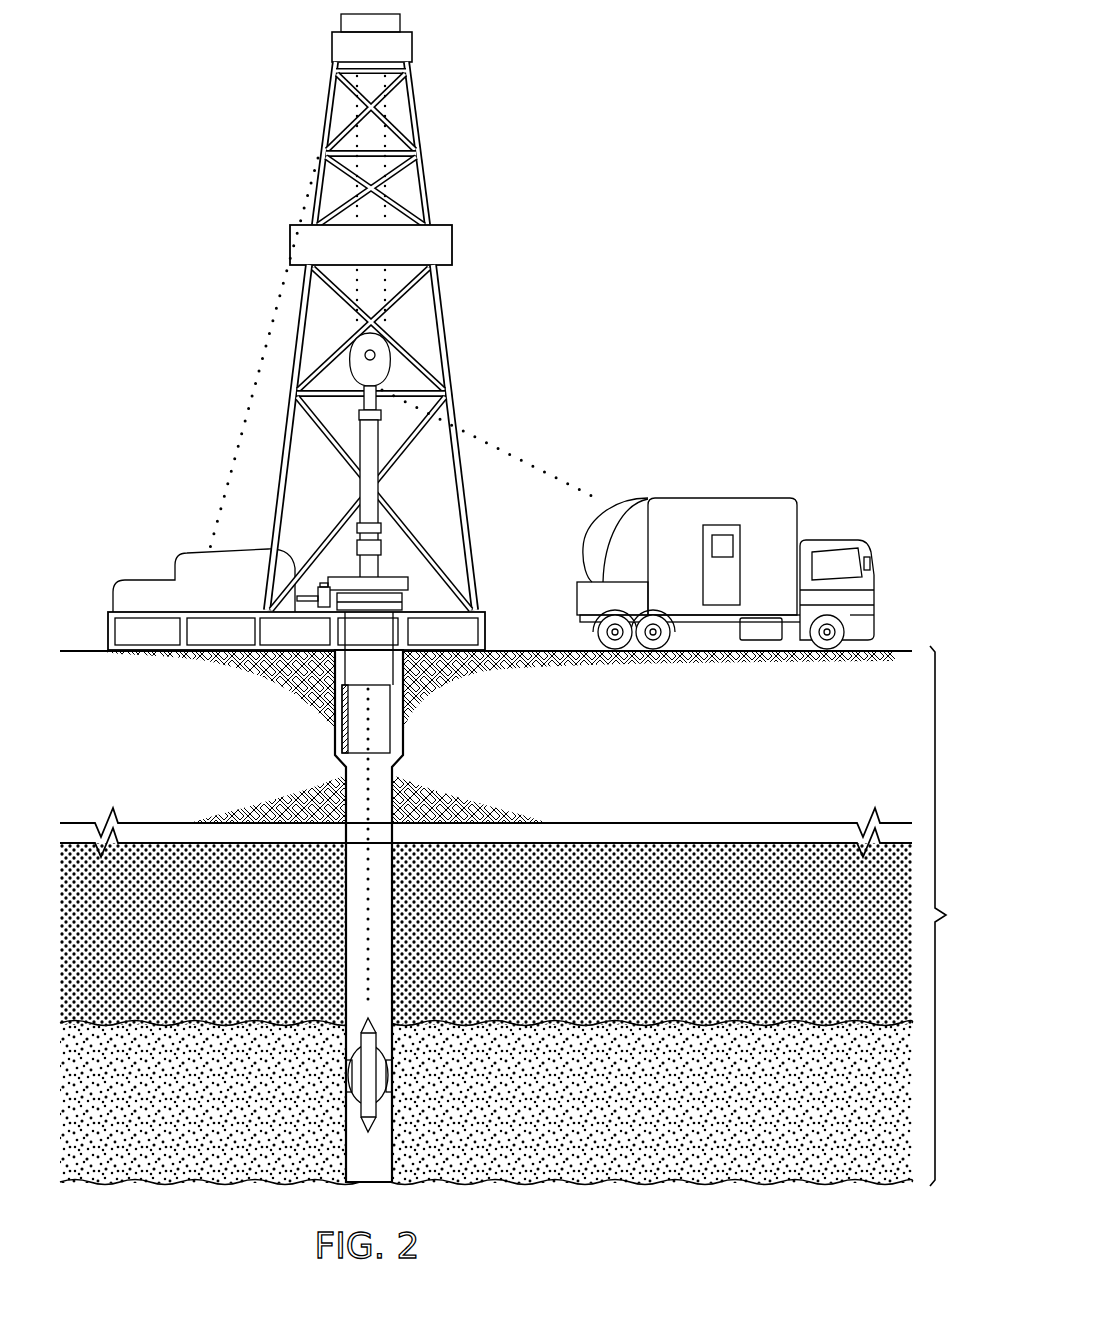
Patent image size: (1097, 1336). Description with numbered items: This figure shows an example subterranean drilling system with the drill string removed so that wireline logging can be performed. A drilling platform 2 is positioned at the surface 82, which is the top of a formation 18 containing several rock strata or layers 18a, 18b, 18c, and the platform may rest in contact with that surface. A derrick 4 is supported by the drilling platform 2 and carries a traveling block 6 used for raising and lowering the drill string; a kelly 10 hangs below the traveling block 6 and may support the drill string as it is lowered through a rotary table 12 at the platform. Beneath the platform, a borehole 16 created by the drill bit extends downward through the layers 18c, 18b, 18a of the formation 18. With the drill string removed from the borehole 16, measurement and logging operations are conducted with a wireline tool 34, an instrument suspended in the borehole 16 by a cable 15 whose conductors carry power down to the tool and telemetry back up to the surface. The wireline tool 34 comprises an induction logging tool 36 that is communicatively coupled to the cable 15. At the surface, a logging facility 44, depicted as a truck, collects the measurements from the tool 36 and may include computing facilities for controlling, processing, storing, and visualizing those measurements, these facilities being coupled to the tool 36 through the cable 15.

The drilling platform 2 is at (486, 632).
The derrick 4 is at (420, 143).
The traveling block 6 is at (389, 362).
The kelly 10 is at (380, 452).
The rotary table 12 is at (350, 575).
The cable 15 is at (374, 898).
The borehole 16 is at (391, 968).
The formation 18 is at (956, 916).
The rock stratum or layer 18a is at (628, 1115).
The rock stratum or layer 18b is at (632, 950).
The rock stratum or layer 18c is at (632, 757).
The wireline tool 34 is at (376, 1108).
The induction logging tool 36 is at (348, 1108).
The logging facility 44 is at (732, 497).
The surface 82 is at (83, 650).